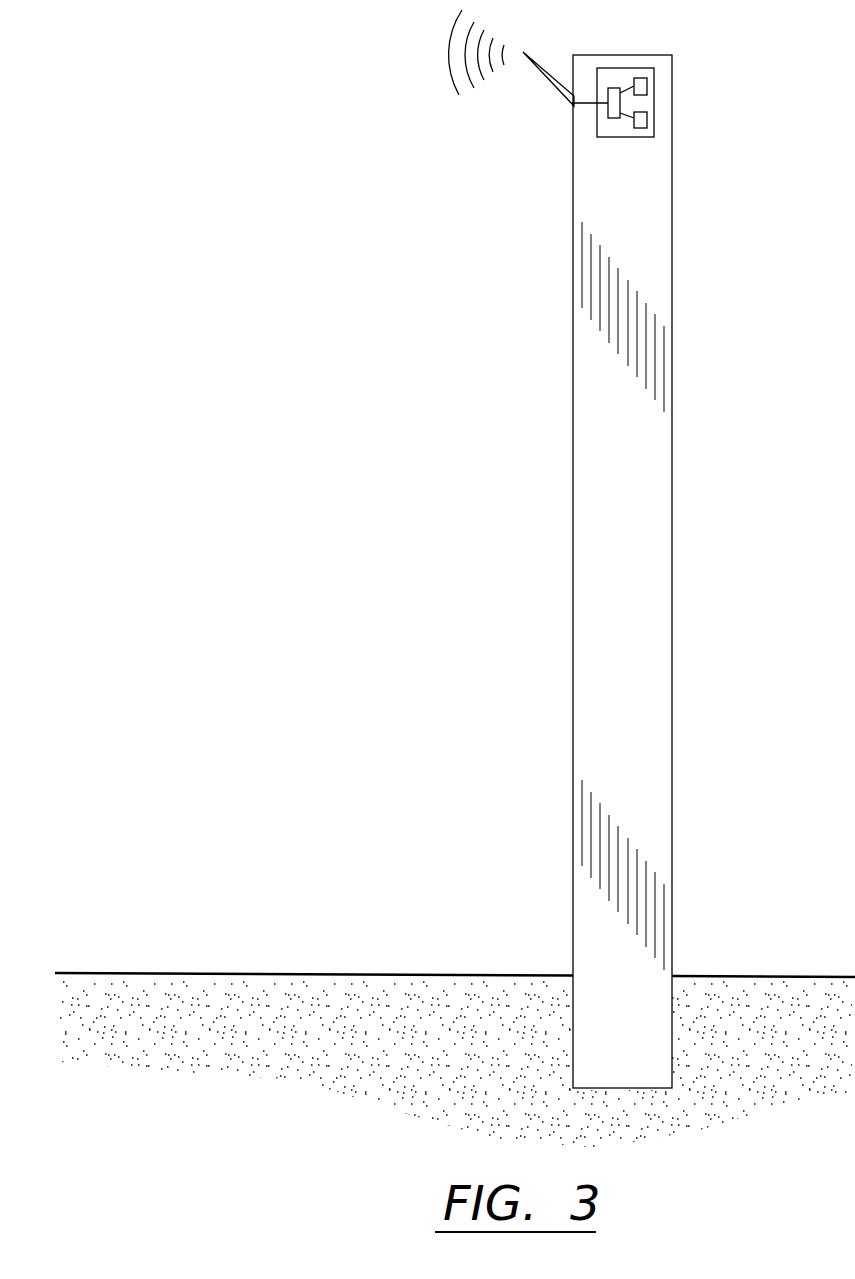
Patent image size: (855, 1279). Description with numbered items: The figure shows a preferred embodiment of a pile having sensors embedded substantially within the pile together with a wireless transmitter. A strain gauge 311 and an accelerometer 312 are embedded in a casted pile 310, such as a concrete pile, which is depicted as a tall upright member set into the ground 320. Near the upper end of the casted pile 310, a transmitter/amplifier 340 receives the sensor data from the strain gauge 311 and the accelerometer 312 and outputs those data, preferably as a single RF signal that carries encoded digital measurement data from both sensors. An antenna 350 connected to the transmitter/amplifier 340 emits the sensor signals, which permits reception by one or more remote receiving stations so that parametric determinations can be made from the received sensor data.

The casted pile 310 is at (573, 566).
The strain gauge 311 is at (647, 121).
The accelerometer 312 is at (647, 84).
The ground 320 is at (287, 973).
The transmitter/amplifier 340 is at (616, 88).
The wireless transmitter antenna 350 is at (548, 83).